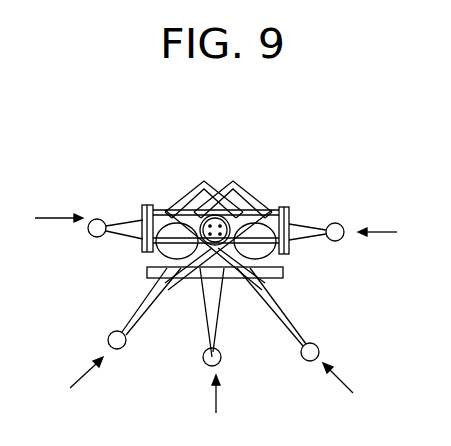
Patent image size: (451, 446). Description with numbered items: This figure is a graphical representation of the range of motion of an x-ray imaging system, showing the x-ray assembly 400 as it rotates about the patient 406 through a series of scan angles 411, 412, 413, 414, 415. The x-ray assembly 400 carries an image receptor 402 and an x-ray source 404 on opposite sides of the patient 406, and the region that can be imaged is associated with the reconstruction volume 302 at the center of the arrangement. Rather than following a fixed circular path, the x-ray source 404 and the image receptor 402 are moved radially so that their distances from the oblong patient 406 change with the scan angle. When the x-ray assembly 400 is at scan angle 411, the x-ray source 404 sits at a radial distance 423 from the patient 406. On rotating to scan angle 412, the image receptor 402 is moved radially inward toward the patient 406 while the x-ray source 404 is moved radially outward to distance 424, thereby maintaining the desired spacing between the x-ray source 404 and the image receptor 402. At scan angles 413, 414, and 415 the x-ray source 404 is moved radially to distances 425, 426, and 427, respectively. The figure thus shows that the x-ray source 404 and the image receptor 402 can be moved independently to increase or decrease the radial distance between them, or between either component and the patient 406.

The x-ray assembly 400 is at (320, 143).
The 3D reconstruction volume 302 is at (243, 196).
The image receptor 402 is at (183, 200).
The x-ray source 404 is at (317, 344).
The patient 406 is at (163, 255).
The scan angle 411 is at (50, 215).
The scan angle 412 is at (78, 383).
The scan angle 413 is at (216, 408).
The scan angle 414 is at (343, 380).
The scan angle 415 is at (391, 228).
The radial distance 423 is at (123, 235).
The radial distance 424 is at (163, 305).
The radial distance 425 is at (223, 303).
The radial distance 426 is at (287, 315).
The radial distance 427 is at (305, 225).